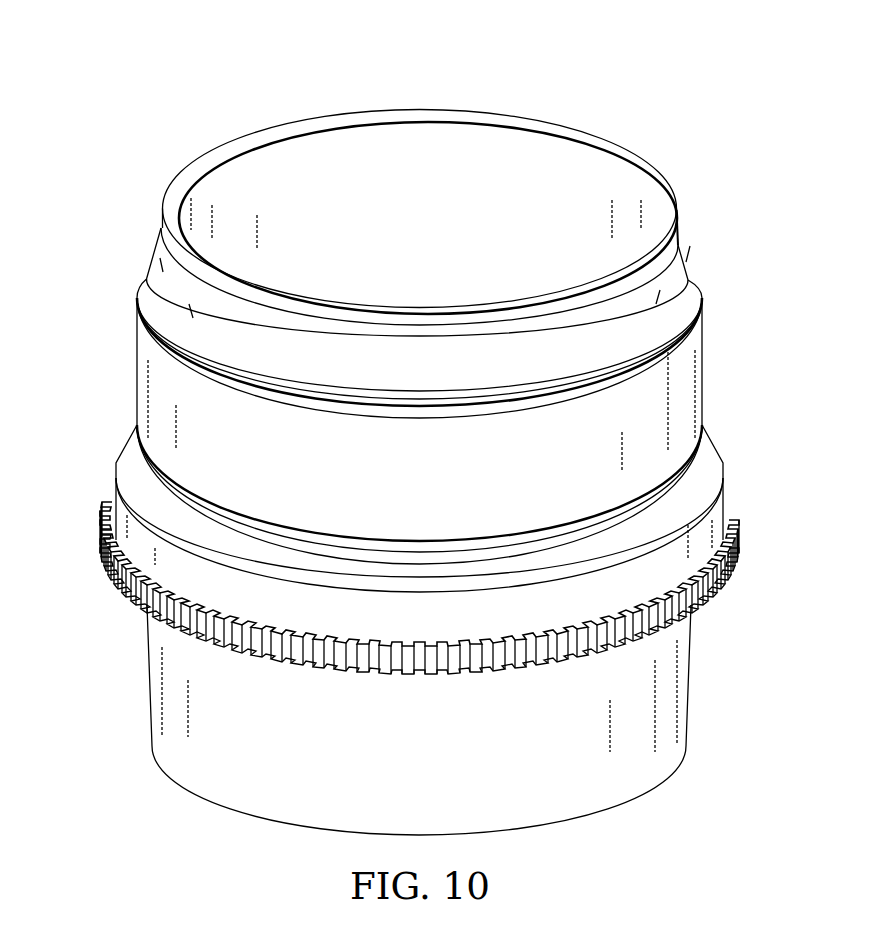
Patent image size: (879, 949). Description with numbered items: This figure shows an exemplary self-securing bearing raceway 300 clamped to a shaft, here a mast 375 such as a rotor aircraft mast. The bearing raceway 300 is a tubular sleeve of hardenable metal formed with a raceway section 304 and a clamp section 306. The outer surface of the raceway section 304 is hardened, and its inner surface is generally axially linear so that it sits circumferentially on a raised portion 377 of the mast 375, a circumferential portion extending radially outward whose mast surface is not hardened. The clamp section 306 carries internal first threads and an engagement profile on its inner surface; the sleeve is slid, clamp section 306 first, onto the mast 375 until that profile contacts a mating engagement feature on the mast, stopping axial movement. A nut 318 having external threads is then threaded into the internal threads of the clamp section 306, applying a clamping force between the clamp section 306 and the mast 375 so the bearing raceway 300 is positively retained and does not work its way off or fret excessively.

The self-securing bearing raceway 300 is at (246, 86).
The raceway section 304 is at (759, 281).
The clamp section 306 is at (759, 463).
The nut 318 is at (99, 538).
The mast 375 is at (148, 686).
The raised portion 377 is at (295, 390).